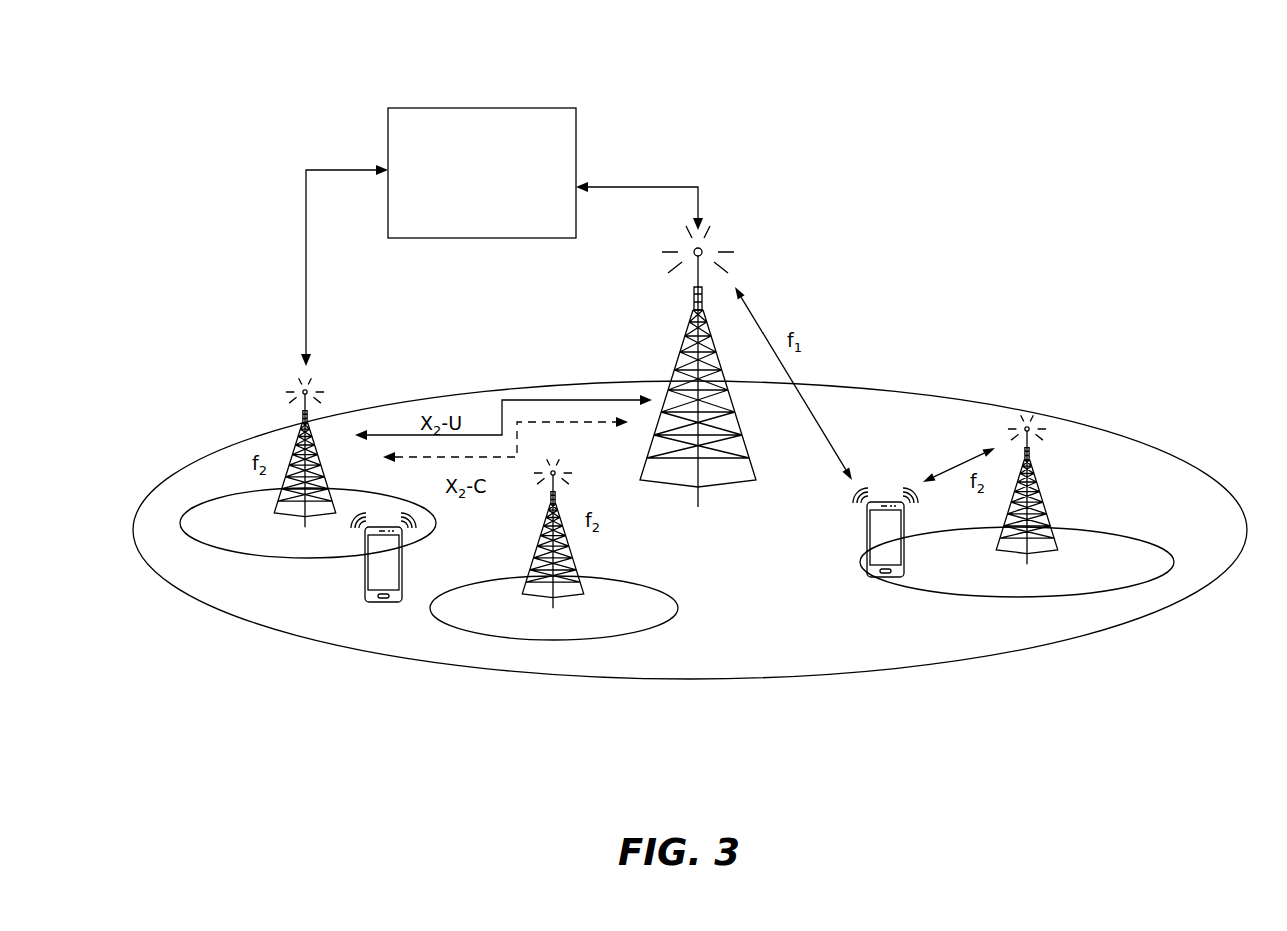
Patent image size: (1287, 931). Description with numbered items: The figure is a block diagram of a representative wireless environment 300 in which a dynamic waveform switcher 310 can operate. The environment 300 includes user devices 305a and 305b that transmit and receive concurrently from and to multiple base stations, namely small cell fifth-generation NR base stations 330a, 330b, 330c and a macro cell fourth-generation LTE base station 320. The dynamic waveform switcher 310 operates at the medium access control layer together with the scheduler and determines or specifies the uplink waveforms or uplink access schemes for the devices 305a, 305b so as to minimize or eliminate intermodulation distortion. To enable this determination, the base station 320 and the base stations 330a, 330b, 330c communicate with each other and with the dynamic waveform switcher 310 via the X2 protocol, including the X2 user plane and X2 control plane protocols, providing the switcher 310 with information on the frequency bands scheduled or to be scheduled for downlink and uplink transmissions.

The wireless environment 300 is at (166, 88).
The dynamic waveform switcher 310 is at (511, 108).
The macro cell 4G LTE base station 320 is at (757, 247).
The small cell 5G NR base station 330a is at (245, 460).
The small cell 5G NR base station 330b is at (541, 648).
The small cell 5G NR base station 330c is at (1030, 590).
The user device 305a is at (381, 615).
The user device 305b is at (864, 545).